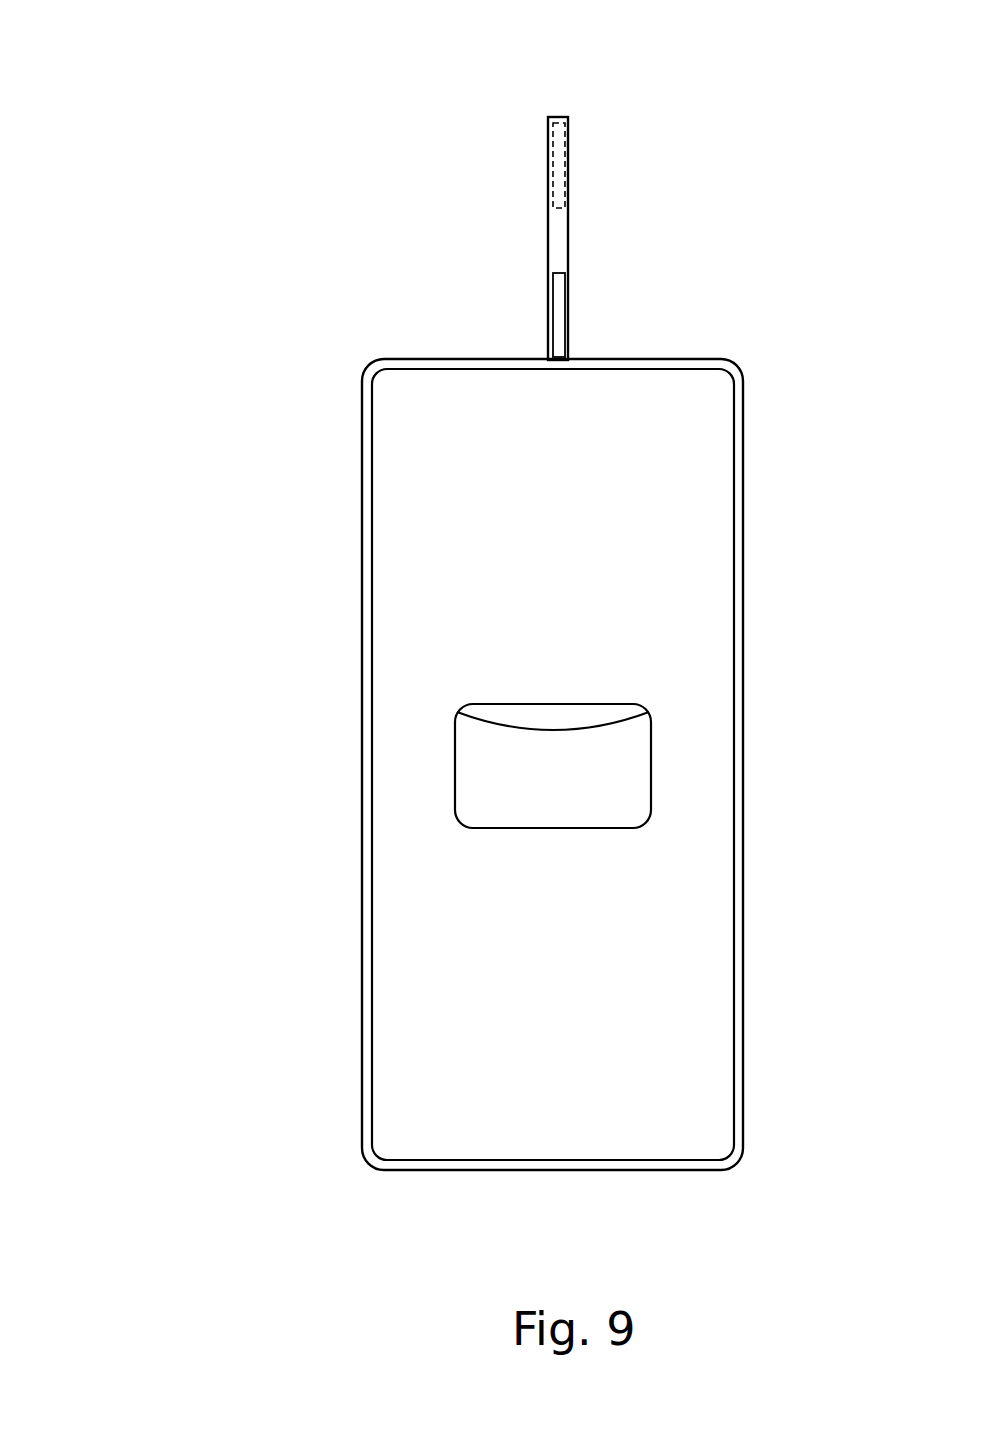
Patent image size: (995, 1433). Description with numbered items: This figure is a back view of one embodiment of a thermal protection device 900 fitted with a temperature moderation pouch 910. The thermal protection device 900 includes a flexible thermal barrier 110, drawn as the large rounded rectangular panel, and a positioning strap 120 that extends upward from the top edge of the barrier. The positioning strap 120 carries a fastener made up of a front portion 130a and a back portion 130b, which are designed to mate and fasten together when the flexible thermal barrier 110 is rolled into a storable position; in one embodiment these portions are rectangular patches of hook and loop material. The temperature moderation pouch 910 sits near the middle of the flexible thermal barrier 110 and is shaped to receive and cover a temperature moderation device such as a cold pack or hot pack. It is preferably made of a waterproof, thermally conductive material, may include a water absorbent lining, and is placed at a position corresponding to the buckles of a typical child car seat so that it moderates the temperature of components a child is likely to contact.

The thermal protection device 900 is at (130, 61).
The flexible thermal barrier 110 is at (377, 362).
The positioning strap 120 is at (548, 228).
The front portion 130a is at (563, 158).
The back portion 130b is at (563, 288).
The temperature moderation pouch 910 is at (548, 710).